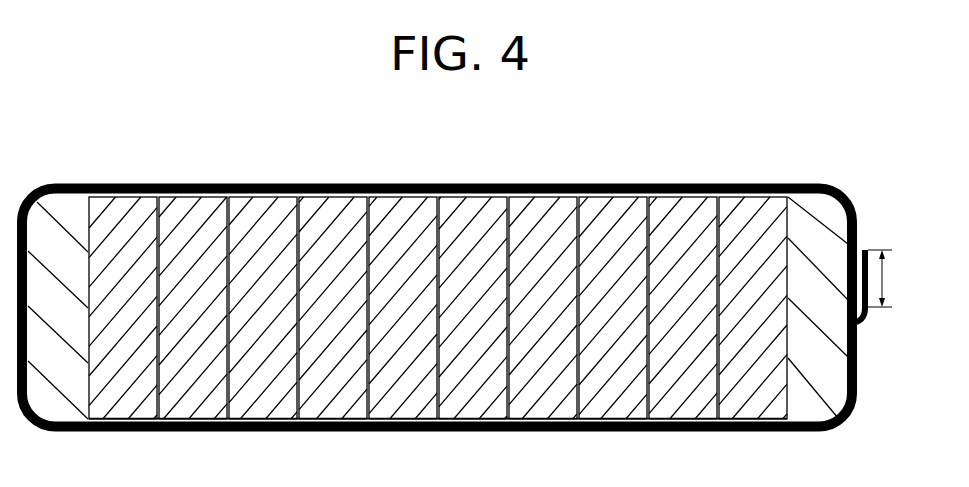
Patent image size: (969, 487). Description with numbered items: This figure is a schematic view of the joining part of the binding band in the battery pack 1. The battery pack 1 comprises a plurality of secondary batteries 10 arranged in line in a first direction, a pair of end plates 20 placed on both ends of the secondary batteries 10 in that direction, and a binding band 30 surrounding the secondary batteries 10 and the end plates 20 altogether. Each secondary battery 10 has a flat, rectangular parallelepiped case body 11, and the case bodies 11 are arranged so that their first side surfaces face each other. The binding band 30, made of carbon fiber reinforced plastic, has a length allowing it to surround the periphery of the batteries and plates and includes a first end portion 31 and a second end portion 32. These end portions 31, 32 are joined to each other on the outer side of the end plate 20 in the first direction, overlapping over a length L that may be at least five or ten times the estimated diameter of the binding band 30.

The battery pack 1 is at (113, 146).
The secondary battery 10 is at (192, 207).
The case body 11 is at (123, 422).
The end plate 20 is at (60, 205).
The binding band 30 is at (437, 184).
The first end portion 31 is at (840, 268).
The second end portion 32 is at (867, 277).